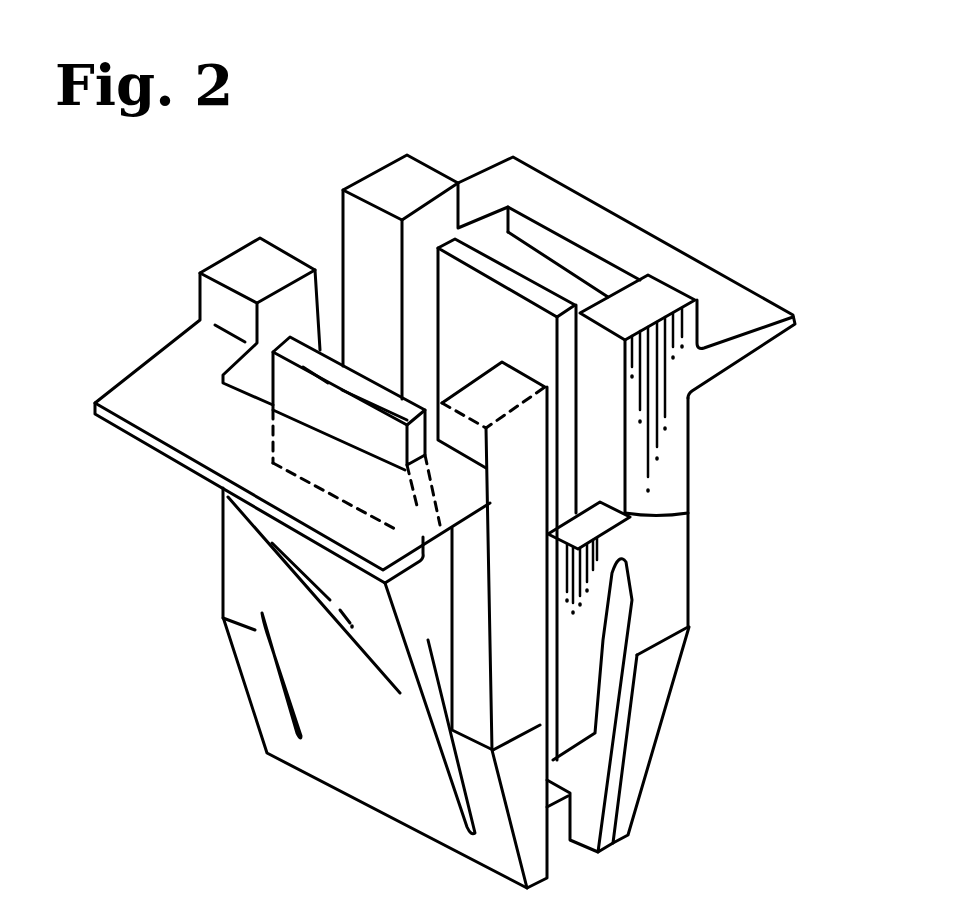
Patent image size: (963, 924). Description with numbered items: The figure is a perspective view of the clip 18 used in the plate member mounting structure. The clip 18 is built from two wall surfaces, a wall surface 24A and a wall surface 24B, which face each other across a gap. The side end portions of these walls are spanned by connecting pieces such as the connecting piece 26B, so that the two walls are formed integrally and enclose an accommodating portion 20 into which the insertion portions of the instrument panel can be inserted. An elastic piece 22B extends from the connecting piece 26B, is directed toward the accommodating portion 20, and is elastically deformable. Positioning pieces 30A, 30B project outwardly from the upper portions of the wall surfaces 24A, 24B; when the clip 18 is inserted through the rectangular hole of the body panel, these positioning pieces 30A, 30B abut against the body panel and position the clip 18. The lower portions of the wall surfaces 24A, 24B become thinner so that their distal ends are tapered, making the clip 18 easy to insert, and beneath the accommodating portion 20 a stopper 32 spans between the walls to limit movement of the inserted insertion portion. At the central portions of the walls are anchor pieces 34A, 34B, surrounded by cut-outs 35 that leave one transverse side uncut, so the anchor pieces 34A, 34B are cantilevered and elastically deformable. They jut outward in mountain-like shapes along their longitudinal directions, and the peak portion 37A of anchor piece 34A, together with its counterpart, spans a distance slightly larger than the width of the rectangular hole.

The clip 18 is at (748, 158).
The accommodating portion 20 is at (417, 377).
The elastic piece 22B is at (583, 690).
The wall surface 24A is at (490, 690).
The wall surface 24B is at (660, 593).
The connecting piece 26B is at (688, 513).
The positioning piece 30A is at (157, 413).
The positioning piece 30B is at (745, 317).
The stopper 32 is at (560, 822).
The anchor piece 34A is at (290, 640).
The anchor piece 34B is at (488, 270).
The cut-outs 35 is at (452, 640).
The peak portion 37A is at (247, 530).